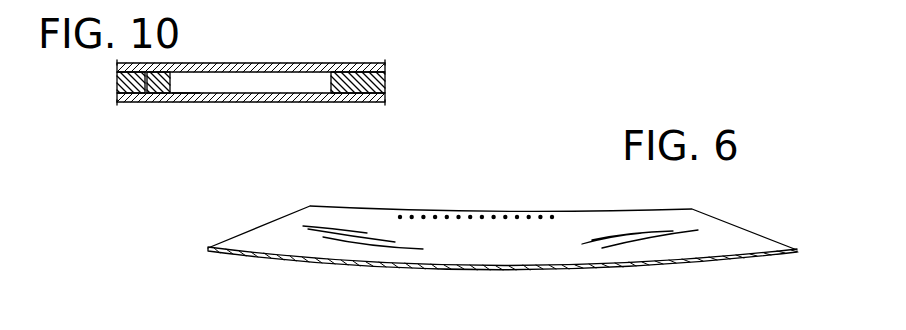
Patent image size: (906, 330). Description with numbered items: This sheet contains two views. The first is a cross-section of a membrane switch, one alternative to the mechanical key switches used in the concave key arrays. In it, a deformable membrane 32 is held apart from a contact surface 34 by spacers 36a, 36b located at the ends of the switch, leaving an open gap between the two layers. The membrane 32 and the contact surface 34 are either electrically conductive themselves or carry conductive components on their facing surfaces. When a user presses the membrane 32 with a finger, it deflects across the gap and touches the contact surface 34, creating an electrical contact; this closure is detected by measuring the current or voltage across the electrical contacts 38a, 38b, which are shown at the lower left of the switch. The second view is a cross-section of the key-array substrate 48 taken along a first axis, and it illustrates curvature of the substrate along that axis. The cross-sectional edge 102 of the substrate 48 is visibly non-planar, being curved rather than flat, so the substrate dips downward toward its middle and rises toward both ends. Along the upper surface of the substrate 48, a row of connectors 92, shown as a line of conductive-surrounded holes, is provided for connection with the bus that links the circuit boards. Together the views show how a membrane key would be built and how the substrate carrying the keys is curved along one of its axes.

In FIG. 10, the deformable membrane 32 is at (292, 63).
In FIG. 10, the contact surface 34 is at (293, 102).
In FIG. 10, the spacer 36a is at (116, 80).
In FIG. 10, the spacer 36b is at (385, 75).
In FIG. 10, the electrical contact 38a is at (143, 92).
In FIG. 10, the electrical contact 38b is at (185, 103).
In FIG. 6, the substrate 48 is at (727, 233).
In FIG. 6, the connectors 92 is at (552, 217).
In FIG. 6, the cross-sectional edge 102 is at (728, 262).